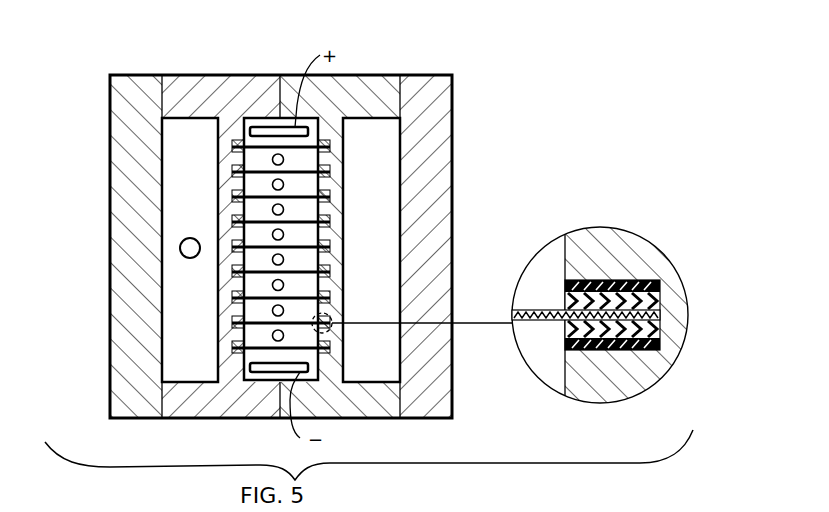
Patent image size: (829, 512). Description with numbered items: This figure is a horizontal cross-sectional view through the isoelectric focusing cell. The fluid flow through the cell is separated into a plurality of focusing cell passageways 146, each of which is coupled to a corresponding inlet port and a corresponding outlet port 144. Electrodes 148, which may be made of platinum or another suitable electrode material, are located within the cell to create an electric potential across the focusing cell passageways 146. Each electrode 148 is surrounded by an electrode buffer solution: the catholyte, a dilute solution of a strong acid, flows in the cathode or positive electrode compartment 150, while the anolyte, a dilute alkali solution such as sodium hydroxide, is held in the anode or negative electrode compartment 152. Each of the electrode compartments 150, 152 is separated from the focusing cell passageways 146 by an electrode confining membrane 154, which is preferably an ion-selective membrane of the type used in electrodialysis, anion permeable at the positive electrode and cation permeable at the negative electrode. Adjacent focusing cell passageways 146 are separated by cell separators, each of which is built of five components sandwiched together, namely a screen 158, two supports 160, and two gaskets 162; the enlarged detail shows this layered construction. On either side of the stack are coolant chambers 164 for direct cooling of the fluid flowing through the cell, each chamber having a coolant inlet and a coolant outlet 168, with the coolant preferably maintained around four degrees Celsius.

The outlet ports 144 is at (191, 249).
The focusing cell passageways 146 is at (262, 312).
The electrodes 148 is at (263, 127).
The positive electrode compartment 150 is at (306, 135).
The negative electrode compartment 152 is at (255, 373).
The electrode confining membrane 154 is at (330, 147).
The screen 158 is at (543, 320).
The supports 160 is at (565, 336).
The gaskets 162 is at (662, 344).
The coolant chambers 164 is at (377, 163).
The coolant outlet 168 is at (184, 243).